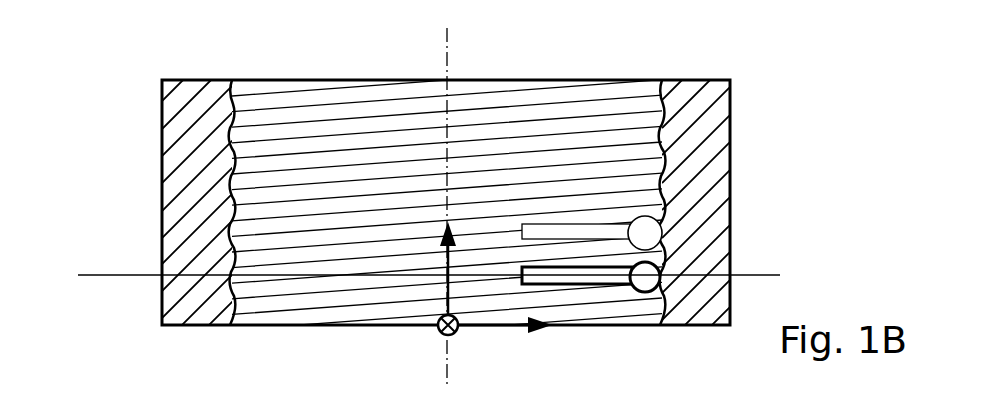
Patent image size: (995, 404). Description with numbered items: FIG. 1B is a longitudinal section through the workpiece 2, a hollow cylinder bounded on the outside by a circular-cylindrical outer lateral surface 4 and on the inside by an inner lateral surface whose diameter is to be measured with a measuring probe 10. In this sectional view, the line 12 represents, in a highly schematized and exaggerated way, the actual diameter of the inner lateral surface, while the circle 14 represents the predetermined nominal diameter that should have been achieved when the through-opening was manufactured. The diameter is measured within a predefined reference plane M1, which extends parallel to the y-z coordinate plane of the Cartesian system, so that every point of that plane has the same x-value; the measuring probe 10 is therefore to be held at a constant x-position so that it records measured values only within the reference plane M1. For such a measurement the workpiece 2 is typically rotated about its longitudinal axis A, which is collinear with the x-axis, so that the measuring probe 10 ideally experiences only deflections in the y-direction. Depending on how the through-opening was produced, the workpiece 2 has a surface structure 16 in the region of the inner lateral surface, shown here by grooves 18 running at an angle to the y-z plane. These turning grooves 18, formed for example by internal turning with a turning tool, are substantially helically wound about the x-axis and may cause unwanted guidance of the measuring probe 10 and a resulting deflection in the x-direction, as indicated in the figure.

The workpiece 2 is at (502, 194).
The circular-cylindrical outer lateral surface 4 is at (163, 118).
The measuring probe 10 is at (570, 267).
The line 12 is at (230, 118).
The circle 14 is at (234, 128).
The surface structure 16 is at (535, 108).
The grooves 18 is at (498, 113).
The longitudinal axis A is at (447, 42).
The reference plane M1 is at (122, 275).